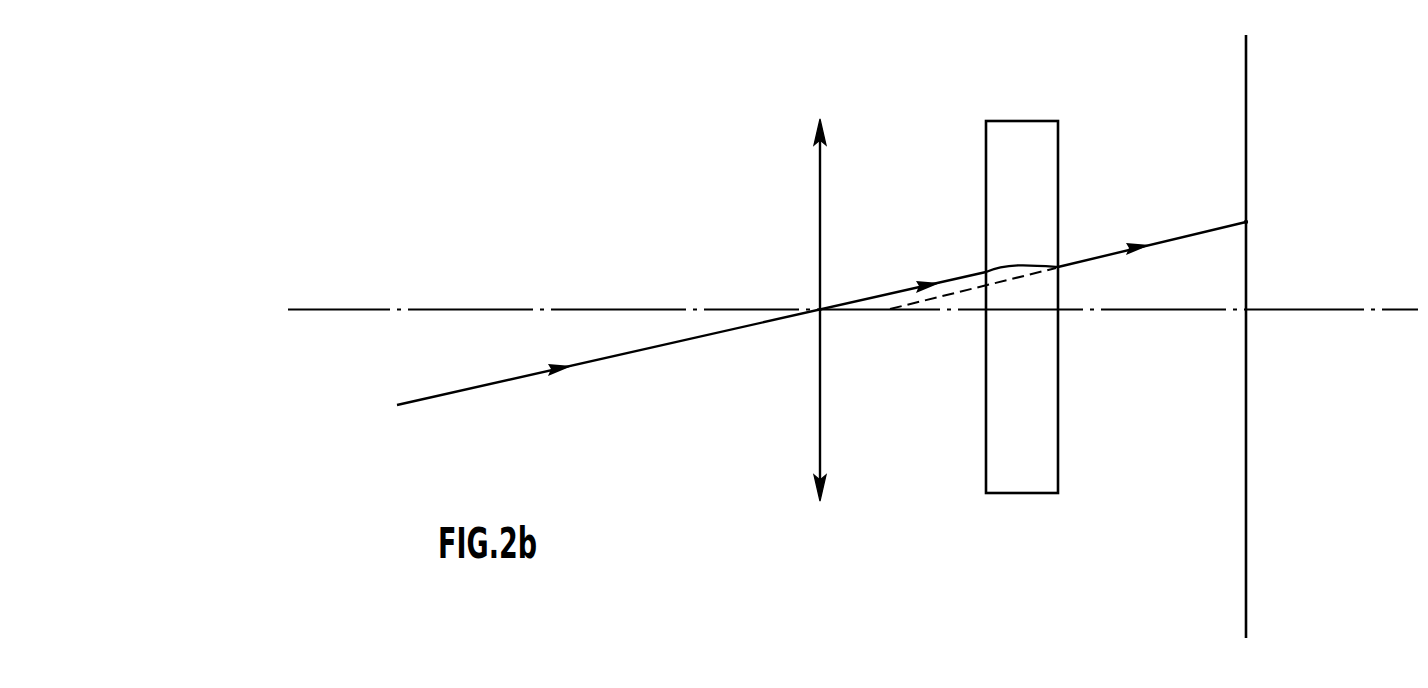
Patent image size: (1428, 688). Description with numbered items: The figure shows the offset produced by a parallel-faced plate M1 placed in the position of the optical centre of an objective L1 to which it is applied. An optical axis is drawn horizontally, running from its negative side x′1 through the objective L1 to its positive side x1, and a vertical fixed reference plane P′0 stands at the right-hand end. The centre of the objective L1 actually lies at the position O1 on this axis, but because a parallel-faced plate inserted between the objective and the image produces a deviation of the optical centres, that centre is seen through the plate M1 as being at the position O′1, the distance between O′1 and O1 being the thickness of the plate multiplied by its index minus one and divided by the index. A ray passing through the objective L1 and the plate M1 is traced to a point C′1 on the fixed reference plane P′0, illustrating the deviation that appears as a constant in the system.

The optical axis (negative direction) x′1 is at (553, 330).
The optical axis (positive direction) x1 is at (1121, 330).
The objective L1 is at (826, 282).
The plane-parallel plate / medium M1 is at (1018, 138).
The fixed reference plane P′0 is at (1267, 333).
The actual position of the objective centre O1 is at (803, 291).
The apparent position of the objective centre O′1 is at (973, 308).
The image point C′1 is at (1267, 206).